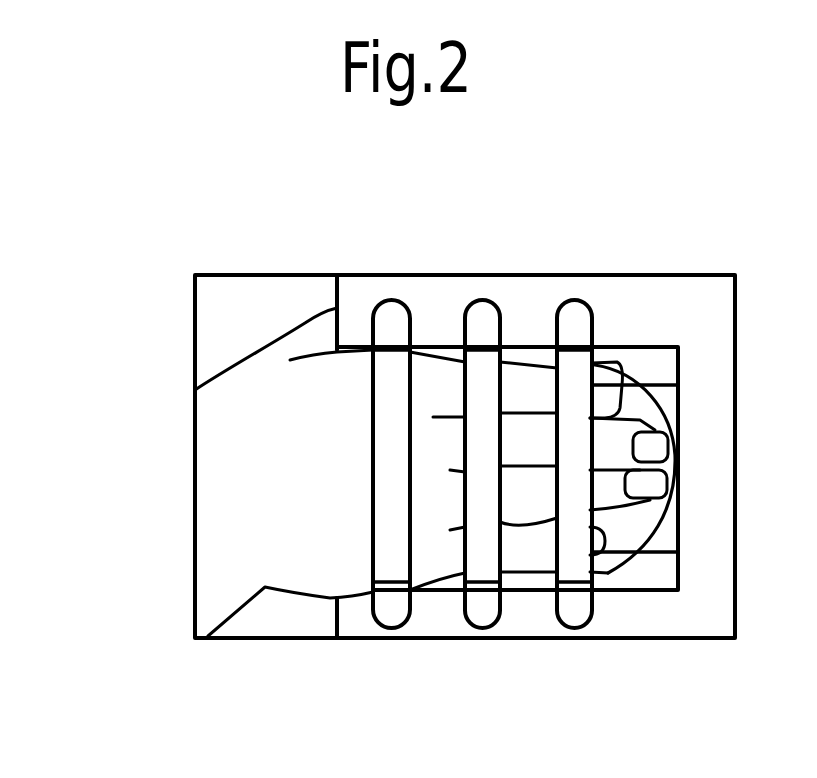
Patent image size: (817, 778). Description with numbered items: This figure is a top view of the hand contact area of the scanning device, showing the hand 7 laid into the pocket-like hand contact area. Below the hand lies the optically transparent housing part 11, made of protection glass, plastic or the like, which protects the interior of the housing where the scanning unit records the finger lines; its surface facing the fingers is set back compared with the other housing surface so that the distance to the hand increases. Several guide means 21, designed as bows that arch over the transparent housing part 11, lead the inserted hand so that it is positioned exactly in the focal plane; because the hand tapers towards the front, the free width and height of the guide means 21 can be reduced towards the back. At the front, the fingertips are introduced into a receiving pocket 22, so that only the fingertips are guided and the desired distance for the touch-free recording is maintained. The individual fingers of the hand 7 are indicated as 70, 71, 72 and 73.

The hand 7 is at (230, 437).
The optically transparent housing part 11 is at (660, 358).
The guide means 21 is at (478, 378).
The receiving pocket 22 is at (647, 518).
The index finger 70 is at (515, 385).
The middle finger 71 is at (610, 445).
The ring finger 72 is at (612, 488).
The little finger 73 is at (527, 557).